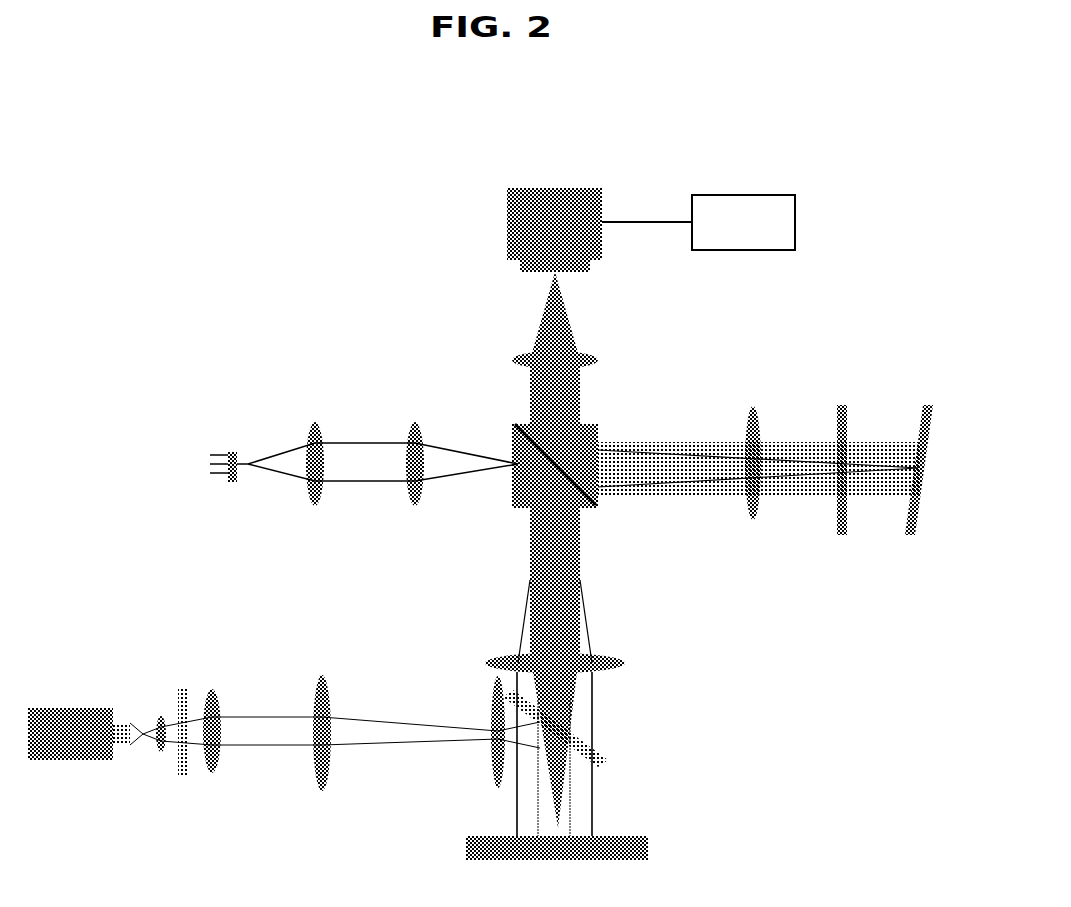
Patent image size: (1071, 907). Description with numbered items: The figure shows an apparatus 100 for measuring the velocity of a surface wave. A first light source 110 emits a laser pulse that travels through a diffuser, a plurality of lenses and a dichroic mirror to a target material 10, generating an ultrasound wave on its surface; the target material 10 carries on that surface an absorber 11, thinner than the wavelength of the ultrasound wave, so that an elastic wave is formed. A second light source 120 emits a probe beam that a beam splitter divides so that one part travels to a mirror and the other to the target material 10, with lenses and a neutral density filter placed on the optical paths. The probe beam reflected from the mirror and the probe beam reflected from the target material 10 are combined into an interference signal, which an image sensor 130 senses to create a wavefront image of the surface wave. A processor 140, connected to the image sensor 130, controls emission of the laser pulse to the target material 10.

The apparatus for measuring the velocity of a surface wave 100 is at (228, 198).
The first light source 110 is at (73, 708).
The second light source 120 is at (232, 447).
The image sensor 130 is at (537, 188).
The processor 140 is at (776, 241).
The target material 10 is at (668, 847).
The absorber 11 is at (472, 838).